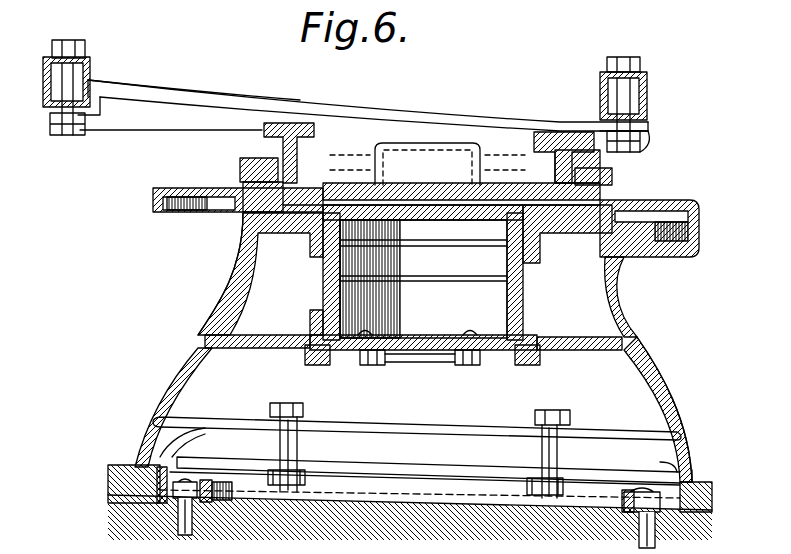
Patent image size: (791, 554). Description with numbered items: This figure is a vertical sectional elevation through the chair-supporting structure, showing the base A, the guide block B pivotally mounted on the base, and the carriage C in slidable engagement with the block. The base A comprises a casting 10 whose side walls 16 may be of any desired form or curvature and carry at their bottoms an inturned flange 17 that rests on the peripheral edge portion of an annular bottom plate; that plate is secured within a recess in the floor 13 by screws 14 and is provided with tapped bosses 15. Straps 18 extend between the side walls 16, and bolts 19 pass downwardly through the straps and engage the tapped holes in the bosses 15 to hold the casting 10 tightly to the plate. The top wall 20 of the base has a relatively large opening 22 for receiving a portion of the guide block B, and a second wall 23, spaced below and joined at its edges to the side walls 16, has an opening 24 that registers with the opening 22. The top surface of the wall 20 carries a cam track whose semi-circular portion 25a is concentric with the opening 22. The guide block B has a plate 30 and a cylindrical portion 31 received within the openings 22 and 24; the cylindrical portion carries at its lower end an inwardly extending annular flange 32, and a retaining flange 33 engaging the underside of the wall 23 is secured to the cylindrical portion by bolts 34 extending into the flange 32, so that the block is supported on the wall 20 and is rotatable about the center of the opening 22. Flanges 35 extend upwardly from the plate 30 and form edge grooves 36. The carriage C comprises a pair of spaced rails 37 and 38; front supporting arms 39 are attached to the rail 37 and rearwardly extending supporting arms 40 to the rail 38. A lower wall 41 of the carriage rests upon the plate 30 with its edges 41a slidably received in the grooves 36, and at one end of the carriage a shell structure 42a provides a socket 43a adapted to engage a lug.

The casting 10 is at (652, 336).
The floor 13 is at (120, 490).
The screws 14 is at (197, 525).
The tapped bosses 15 is at (303, 475).
The side walls 16 is at (178, 380).
The inturned flange 17 is at (182, 453).
The straps 18 is at (393, 425).
The bolts 19 is at (282, 445).
The top wall 20 is at (417, 271).
The opening 22 is at (347, 237).
The second wall 23 is at (284, 338).
The opening 24 is at (312, 318).
The semi-circular portion 25a is at (699, 233).
The plate 30 is at (302, 213).
The cylindrical portion 31 is at (325, 272).
The annular flange 32 is at (420, 333).
The retaining flange 33 is at (327, 354).
The bolts 34 is at (372, 364).
The flanges 35 is at (245, 162).
The edge grooves 36 is at (240, 212).
The rail 37 is at (88, 66).
The rail 38 is at (650, 89).
The front supporting arms 39 is at (157, 97).
The rearwardly extending supporting arms 40 is at (590, 125).
The lower wall 41 is at (304, 183).
The edges 41a is at (240, 170).
The shell structure 42a is at (427, 150).
The socket 43a is at (458, 150).
The base A is at (670, 375).
The guide block B is at (247, 223).
The carriage C is at (172, 115).